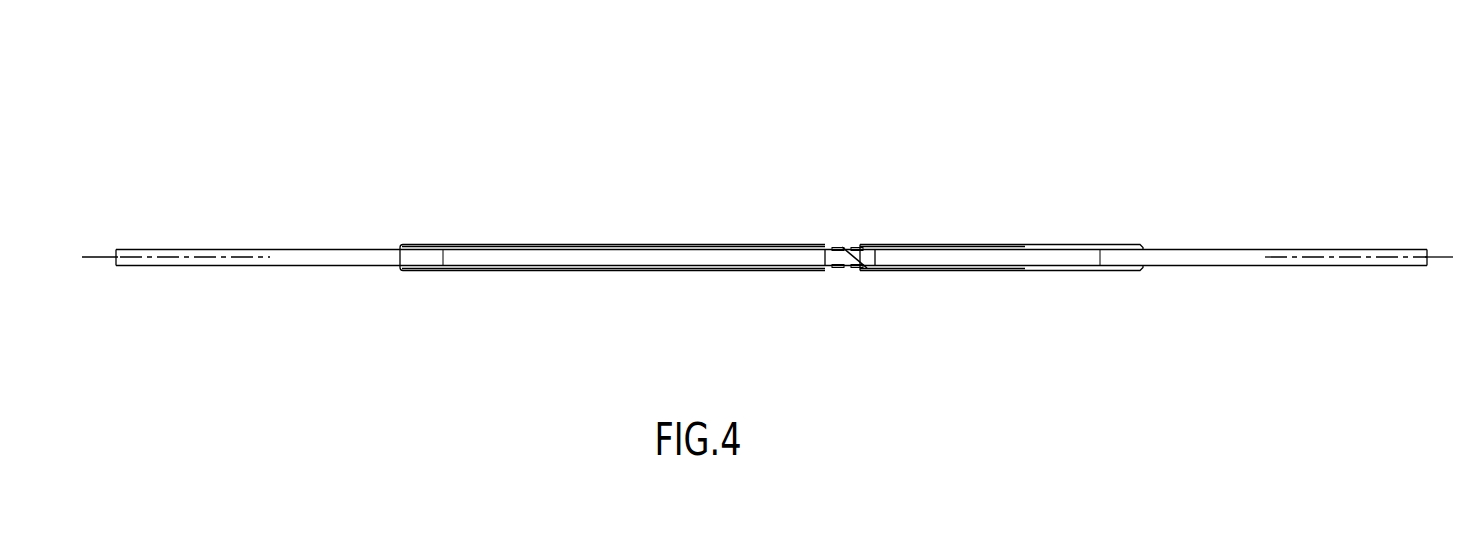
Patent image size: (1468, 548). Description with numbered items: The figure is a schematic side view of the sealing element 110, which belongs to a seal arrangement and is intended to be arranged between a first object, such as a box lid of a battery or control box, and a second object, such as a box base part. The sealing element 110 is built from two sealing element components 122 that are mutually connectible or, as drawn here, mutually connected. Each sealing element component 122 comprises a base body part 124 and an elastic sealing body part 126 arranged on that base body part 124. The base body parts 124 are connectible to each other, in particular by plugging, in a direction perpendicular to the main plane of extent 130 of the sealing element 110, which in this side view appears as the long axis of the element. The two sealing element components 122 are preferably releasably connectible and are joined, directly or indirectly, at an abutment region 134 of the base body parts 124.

The sealing element 110 is at (1182, 85).
The sealing element component 122 is at (140, 266).
The base body part 124 is at (290, 258).
The elastic sealing body part 126 is at (562, 243).
The main plane of extent 130 is at (93, 257).
The abutment region 134 is at (850, 253).